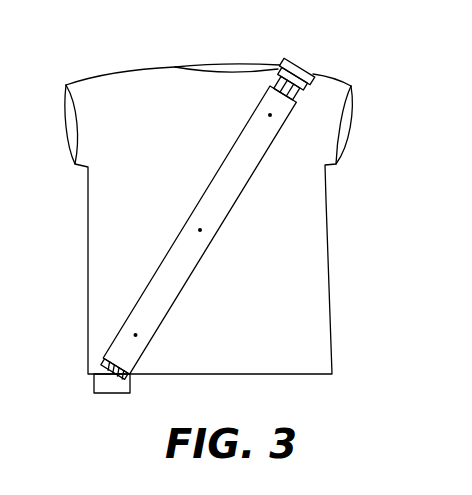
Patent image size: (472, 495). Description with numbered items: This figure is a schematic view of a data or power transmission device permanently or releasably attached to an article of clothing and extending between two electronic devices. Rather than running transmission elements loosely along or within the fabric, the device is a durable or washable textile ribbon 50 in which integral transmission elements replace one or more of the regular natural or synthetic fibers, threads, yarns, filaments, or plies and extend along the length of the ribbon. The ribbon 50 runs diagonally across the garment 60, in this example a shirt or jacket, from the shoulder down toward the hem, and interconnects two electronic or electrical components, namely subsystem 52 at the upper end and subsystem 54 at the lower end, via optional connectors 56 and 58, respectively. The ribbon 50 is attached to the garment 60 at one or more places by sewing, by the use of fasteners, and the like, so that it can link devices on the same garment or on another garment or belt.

The textile ribbon 50 is at (178, 268).
The subsystem 52 is at (296, 62).
The subsystem 54 is at (117, 393).
The connector 56 is at (306, 82).
The connector 58 is at (99, 362).
The garment 60 is at (313, 250).